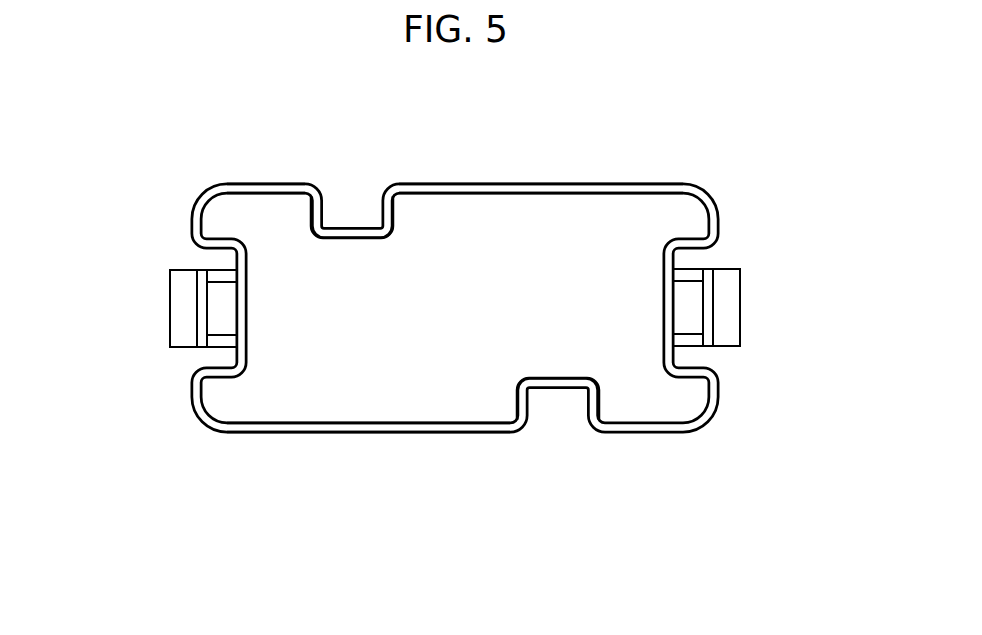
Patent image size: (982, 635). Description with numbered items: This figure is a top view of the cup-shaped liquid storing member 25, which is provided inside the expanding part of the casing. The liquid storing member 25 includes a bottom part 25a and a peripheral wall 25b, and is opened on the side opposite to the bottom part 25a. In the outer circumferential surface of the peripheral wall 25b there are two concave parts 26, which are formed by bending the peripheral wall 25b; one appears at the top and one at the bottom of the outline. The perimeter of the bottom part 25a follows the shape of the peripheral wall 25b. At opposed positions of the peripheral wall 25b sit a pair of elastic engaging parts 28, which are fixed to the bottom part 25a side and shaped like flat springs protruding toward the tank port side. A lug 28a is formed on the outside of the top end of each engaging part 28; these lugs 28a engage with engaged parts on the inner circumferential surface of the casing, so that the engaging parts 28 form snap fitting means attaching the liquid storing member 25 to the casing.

The liquid storing member 25 is at (672, 175).
The bottom part 25a is at (387, 363).
The peripheral wall 25b is at (488, 184).
The concave part 26 is at (362, 207).
The elastic engaging part 28 is at (752, 270).
The lug 28a is at (718, 312).